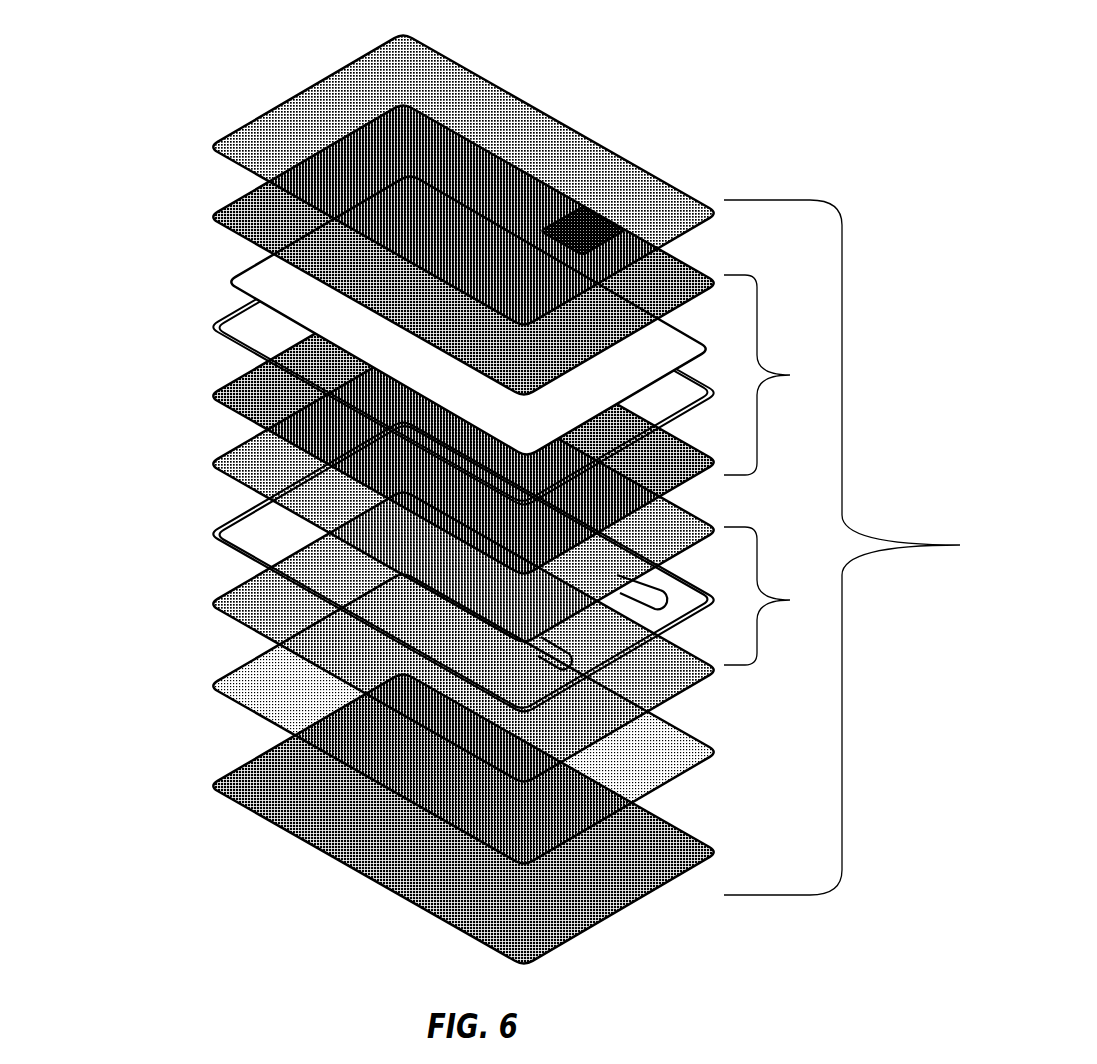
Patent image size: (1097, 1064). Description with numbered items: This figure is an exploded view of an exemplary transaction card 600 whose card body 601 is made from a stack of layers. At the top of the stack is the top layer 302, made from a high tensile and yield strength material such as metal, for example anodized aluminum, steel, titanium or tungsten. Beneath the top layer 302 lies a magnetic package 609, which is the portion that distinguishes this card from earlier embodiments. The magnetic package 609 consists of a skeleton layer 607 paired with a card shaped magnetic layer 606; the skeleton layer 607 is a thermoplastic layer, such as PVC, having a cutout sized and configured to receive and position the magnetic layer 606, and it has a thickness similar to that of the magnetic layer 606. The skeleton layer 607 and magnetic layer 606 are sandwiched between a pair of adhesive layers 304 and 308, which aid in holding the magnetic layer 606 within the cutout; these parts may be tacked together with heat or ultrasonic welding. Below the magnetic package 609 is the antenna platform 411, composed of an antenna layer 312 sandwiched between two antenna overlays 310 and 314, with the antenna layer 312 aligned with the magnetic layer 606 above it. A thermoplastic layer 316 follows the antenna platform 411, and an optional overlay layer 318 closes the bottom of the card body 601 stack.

The transaction card 600 is at (681, 60).
The card body 601 is at (842, 547).
The top layer 302 is at (210, 150).
The adhesive layer 304 is at (210, 222).
The magnetic layer 606 is at (225, 282).
The skeleton layer 607 is at (215, 338).
The adhesive layer 308 is at (215, 405).
The antenna overlay 310 is at (215, 477).
The antenna layer 312 is at (228, 552).
The antenna overlay 314 is at (230, 622).
The thermoplastic layer 316 is at (218, 697).
The overlay layer 318 is at (225, 805).
The magnetic package 609 is at (777, 375).
The antenna platform 411 is at (771, 596).